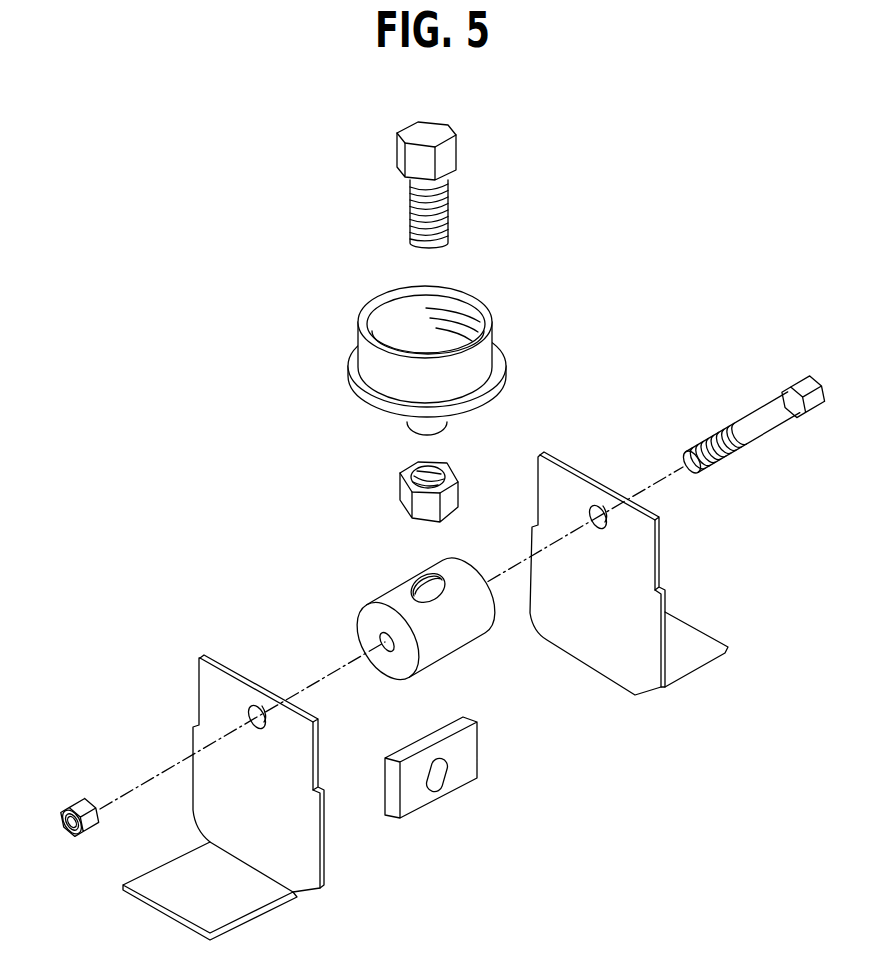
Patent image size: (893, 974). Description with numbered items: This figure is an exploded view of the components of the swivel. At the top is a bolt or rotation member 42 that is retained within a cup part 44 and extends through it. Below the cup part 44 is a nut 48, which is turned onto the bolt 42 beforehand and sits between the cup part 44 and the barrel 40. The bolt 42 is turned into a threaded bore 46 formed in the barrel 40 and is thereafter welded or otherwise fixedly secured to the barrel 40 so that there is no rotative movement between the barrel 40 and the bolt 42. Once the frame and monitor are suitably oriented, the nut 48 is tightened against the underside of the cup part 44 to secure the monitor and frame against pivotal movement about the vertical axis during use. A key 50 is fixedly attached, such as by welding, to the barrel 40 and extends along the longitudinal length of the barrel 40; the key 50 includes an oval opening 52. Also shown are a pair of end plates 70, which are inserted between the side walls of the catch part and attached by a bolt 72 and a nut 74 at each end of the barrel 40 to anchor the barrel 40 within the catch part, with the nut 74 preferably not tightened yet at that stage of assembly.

The barrel 40 is at (419, 608).
The bolt 42 is at (413, 165).
The cup part 44 is at (358, 330).
The threaded bore 46 is at (427, 584).
The nut 48 is at (400, 487).
The key 50 is at (460, 779).
The oval opening 52 is at (438, 782).
The end plates 70 is at (222, 675).
The bolt 72 is at (787, 382).
The nut 74 is at (75, 797).